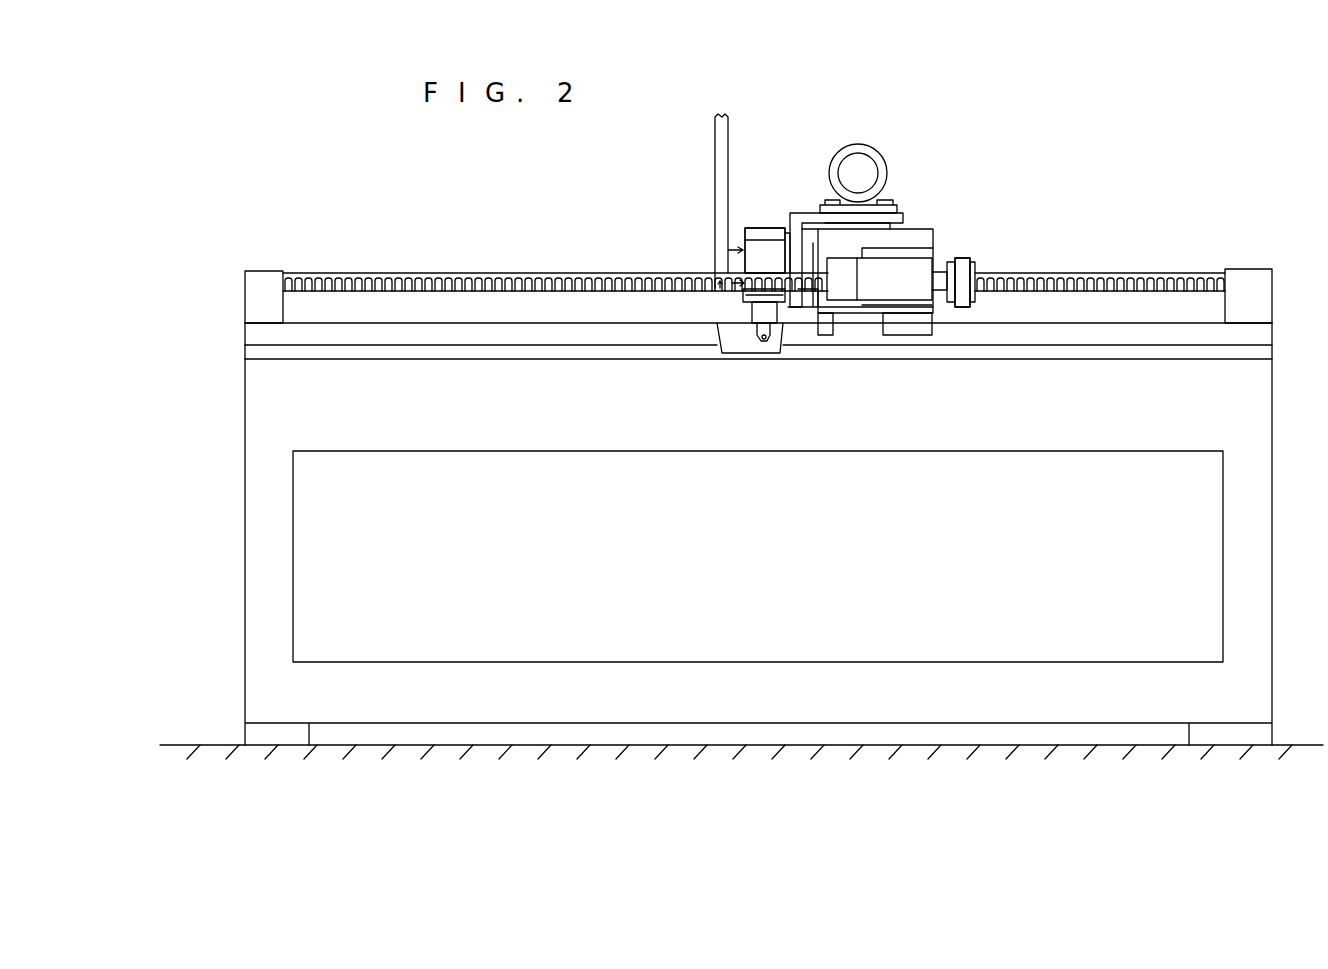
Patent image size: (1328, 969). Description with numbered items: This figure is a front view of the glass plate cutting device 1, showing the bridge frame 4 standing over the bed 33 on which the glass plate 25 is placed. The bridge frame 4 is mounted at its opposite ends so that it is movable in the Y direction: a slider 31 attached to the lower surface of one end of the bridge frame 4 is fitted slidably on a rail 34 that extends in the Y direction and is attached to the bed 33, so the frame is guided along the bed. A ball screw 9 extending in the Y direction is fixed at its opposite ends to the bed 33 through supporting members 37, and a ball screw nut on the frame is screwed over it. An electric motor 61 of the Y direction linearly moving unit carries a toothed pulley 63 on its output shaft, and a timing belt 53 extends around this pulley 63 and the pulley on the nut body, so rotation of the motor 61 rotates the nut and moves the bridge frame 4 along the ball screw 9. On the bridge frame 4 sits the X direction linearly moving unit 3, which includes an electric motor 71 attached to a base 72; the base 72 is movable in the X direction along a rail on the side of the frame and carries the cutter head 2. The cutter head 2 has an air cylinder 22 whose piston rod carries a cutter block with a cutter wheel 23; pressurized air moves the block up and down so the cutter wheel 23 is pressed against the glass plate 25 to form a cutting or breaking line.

The glass plate cutting device 1 is at (1128, 205).
The cutter head 2 is at (772, 223).
The X direction linearly moving unit 3 is at (890, 159).
The bridge frame 4 is at (914, 232).
The ball screw 9 is at (1050, 272).
The air cylinder 22 is at (758, 250).
The cutter wheel 23 is at (763, 341).
The glass plate 25 is at (738, 353).
The slider 31 is at (826, 335).
The bed 33 is at (1258, 407).
The rail 34 is at (1262, 338).
The supporting member 37 is at (262, 271).
The timing belt 53 is at (960, 307).
The electric motor 61 is at (917, 275).
The toothed pulley 63 is at (976, 295).
The electric motor 71 is at (861, 170).
The base 72 is at (800, 213).